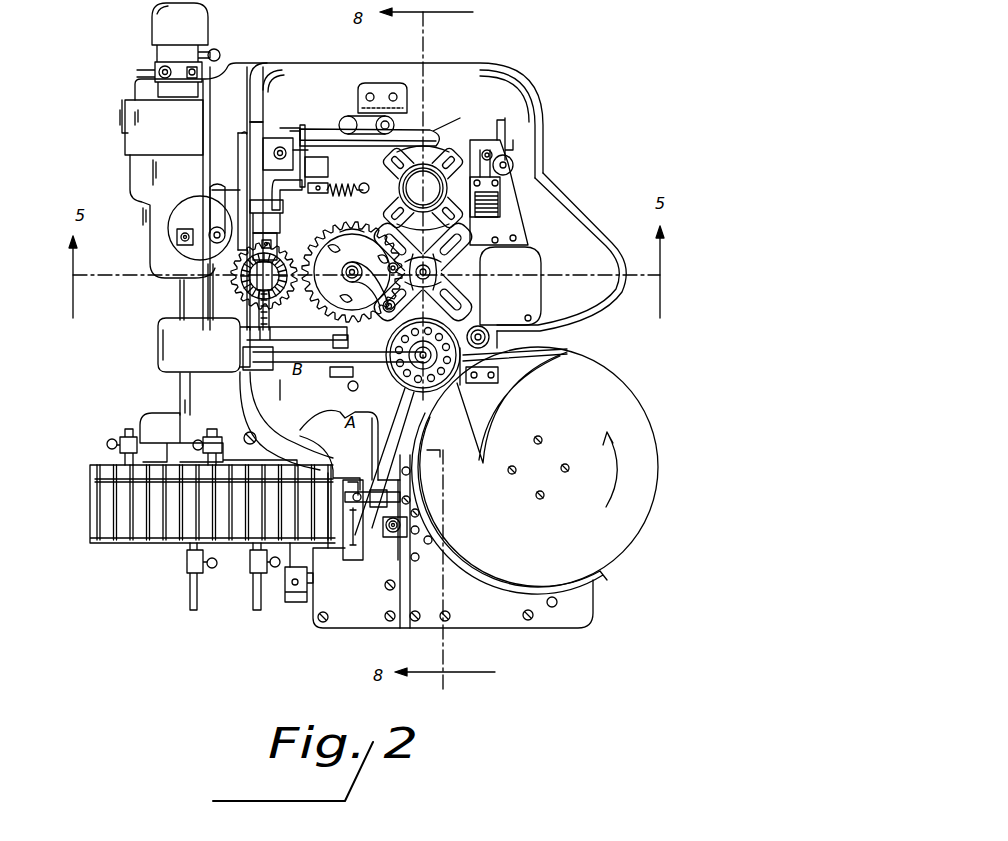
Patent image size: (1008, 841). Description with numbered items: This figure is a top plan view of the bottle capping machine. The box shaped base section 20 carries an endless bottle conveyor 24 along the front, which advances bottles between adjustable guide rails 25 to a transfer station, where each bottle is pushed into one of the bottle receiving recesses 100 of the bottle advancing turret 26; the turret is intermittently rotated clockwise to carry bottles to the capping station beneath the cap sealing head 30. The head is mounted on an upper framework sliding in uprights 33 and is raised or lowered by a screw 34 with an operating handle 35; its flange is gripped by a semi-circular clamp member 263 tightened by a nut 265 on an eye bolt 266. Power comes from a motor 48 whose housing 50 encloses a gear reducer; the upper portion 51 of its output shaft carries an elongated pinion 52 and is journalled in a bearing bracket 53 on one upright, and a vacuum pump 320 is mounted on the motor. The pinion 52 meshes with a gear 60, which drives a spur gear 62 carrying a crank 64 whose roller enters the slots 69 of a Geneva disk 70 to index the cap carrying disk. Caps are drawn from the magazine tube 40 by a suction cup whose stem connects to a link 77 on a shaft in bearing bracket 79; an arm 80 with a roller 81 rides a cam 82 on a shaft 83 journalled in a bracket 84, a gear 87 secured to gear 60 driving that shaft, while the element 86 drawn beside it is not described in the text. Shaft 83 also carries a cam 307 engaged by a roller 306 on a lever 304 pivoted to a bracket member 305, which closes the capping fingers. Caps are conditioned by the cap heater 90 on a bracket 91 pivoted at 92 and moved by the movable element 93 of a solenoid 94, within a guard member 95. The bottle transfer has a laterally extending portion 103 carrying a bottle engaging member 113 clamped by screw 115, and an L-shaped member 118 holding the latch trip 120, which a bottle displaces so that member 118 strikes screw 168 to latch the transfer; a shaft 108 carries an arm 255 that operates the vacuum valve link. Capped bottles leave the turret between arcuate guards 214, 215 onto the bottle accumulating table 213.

The base section 20 is at (538, 106).
The endless bottle conveyor 24 is at (100, 500).
The adjustable guide rails 25 is at (100, 468).
The bottle advancing turret 26 is at (306, 398).
The cap sealing head 30 is at (400, 372).
The uprights 33 is at (262, 127).
The screw 34 is at (359, 96).
The operating handle 35 is at (346, 116).
The magazine tube 40 is at (426, 172).
The motor 48 is at (162, 127).
The housing 50 is at (152, 217).
The upper portion of the output shaft 51 is at (218, 226).
The elongated pinion 52 is at (210, 258).
The bearing bracket 53 is at (225, 198).
The gear 60 is at (250, 302).
The spur gear 62 is at (338, 312).
The crank 64 is at (386, 312).
The slots 69 is at (376, 230).
The Geneva disk 70 is at (462, 268).
The link 77 is at (352, 152).
The bearing bracket 79 is at (316, 158).
The arm 80 is at (303, 194).
The roller 81 is at (292, 208).
The cam 82 is at (270, 190).
The shaft 83 is at (270, 310).
The bracket 84 is at (282, 232).
The rod 86 is at (240, 273).
The gear 87 is at (253, 290).
The cap heater 90 is at (531, 258).
The bracket 91 is at (518, 222).
The pivot 92 is at (512, 164).
The movable element 93 is at (504, 144).
The solenoid 94 is at (498, 199).
The guard member 95 is at (575, 212).
The bottle receiving recesses 100 is at (345, 430).
The laterally extending portion 103 is at (386, 542).
The shaft 108 is at (298, 604).
The bottle engaging member 113 is at (360, 552).
The clamping screw 115 is at (350, 550).
The L-shaped member 118 is at (392, 492).
The latch trip 120 is at (372, 448).
The screw 168 is at (412, 500).
The bottle accumulating table 213 is at (538, 467).
The arcuate guard 214 is at (445, 556).
The arcuate guard 215 is at (495, 432).
The arm 255 is at (272, 600).
The semi-circular clamp member 263 is at (428, 396).
The nut 265 is at (484, 386).
The eye bolt 266 is at (482, 339).
The lever 304 is at (250, 332).
The bracket member 305 is at (341, 336).
The roller 306 is at (252, 357).
The cam 307 is at (243, 372).
The vacuum pump 320 is at (160, 70).